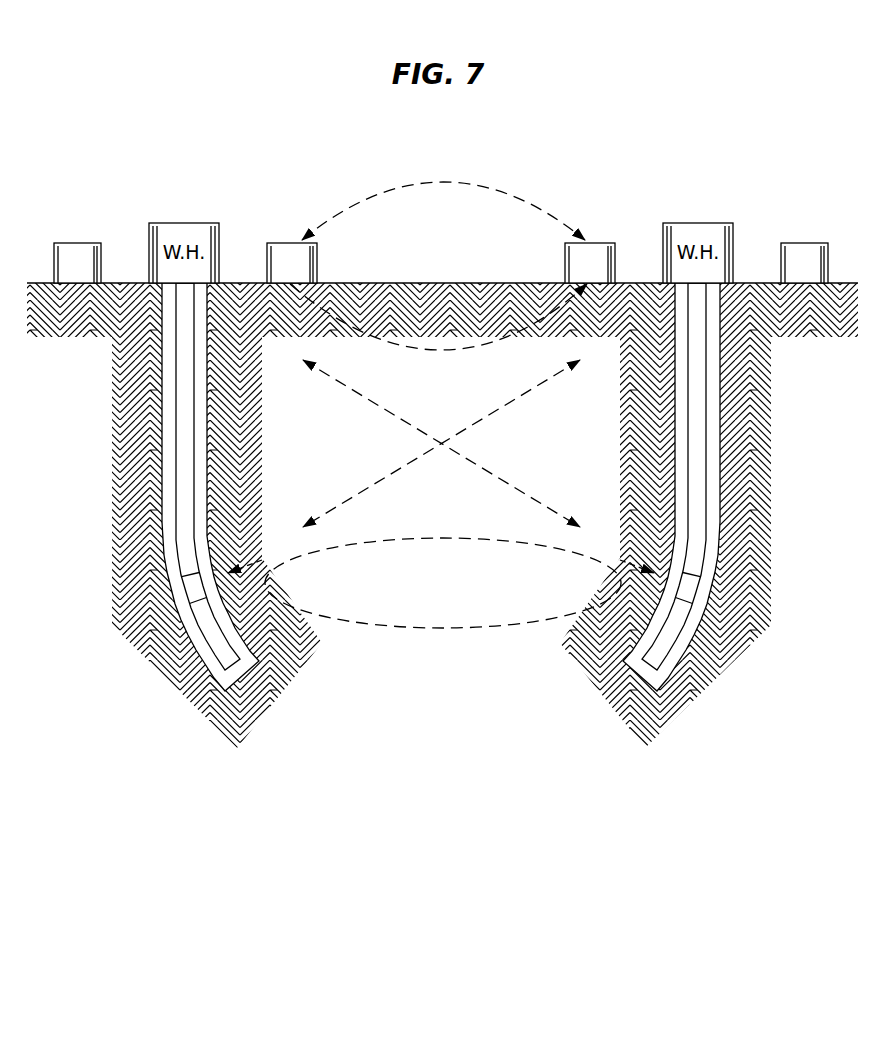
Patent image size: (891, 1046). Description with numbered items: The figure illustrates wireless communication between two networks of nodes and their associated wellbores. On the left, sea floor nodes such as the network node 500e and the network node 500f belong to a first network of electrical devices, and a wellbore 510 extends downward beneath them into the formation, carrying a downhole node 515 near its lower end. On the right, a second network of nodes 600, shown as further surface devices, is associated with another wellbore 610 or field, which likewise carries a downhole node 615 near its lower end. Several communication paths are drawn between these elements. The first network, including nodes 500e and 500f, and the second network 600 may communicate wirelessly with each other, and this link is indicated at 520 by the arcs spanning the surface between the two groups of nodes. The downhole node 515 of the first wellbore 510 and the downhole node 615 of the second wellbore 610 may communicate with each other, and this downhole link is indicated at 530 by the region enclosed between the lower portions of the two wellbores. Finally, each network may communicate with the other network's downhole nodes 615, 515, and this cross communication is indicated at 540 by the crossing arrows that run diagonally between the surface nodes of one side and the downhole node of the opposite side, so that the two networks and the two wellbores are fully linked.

The network node 500e is at (73, 243).
The network node 500f is at (283, 243).
The second network of nodes 600 is at (603, 243).
The wellbore 510 is at (157, 428).
The downhole node 515 is at (193, 590).
The another wellbore 610 is at (723, 425).
The downhole node 615 is at (689, 590).
The communication between first and second networks 520 is at (462, 350).
The communication between downhole nodes 530 is at (452, 538).
The communication between each network and the other's downhole nodes 540 is at (488, 415).